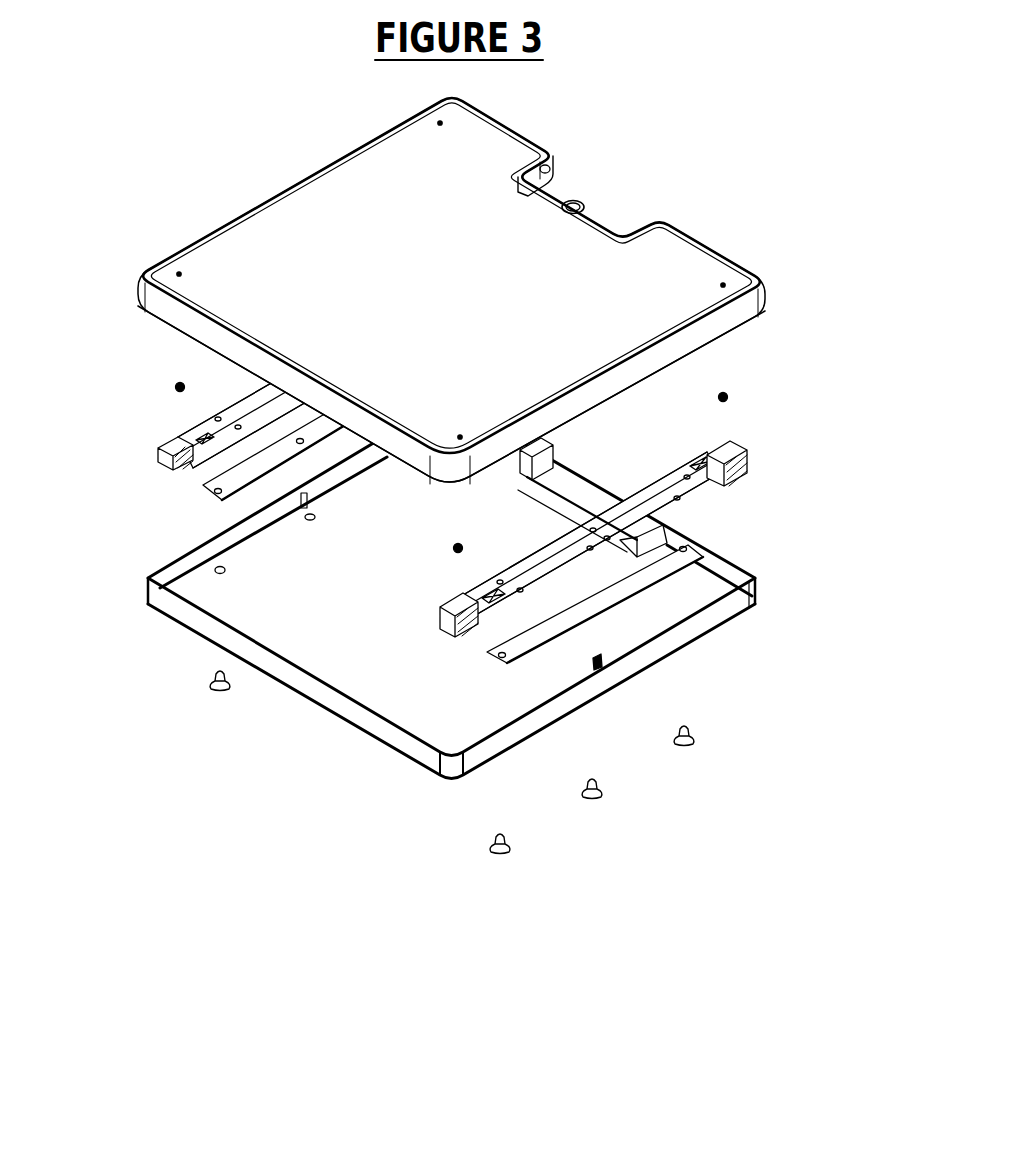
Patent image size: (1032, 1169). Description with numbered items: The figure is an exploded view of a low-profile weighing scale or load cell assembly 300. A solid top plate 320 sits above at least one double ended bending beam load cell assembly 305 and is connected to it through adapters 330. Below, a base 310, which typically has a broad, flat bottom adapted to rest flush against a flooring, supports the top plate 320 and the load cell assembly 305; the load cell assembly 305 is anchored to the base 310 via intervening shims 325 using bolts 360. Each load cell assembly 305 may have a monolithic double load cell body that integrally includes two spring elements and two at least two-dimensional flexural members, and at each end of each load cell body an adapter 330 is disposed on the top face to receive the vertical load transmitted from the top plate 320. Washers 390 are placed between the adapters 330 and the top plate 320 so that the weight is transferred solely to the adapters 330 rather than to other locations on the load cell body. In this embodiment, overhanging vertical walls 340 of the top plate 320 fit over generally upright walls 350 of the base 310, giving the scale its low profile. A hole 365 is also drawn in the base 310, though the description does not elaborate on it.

The load cell assembly 300 is at (644, 154).
The double ended bending beam load cell assembly 305 is at (550, 551).
The base 310 is at (297, 608).
The top plate 320 is at (320, 245).
The shims 325 is at (235, 481).
The adapters 330 is at (157, 448).
The overhanging vertical walls 340 is at (553, 452).
The upright walls 350 is at (673, 643).
The bolts 360 is at (683, 748).
The hole 365 is at (215, 571).
The washers 390 is at (176, 387).